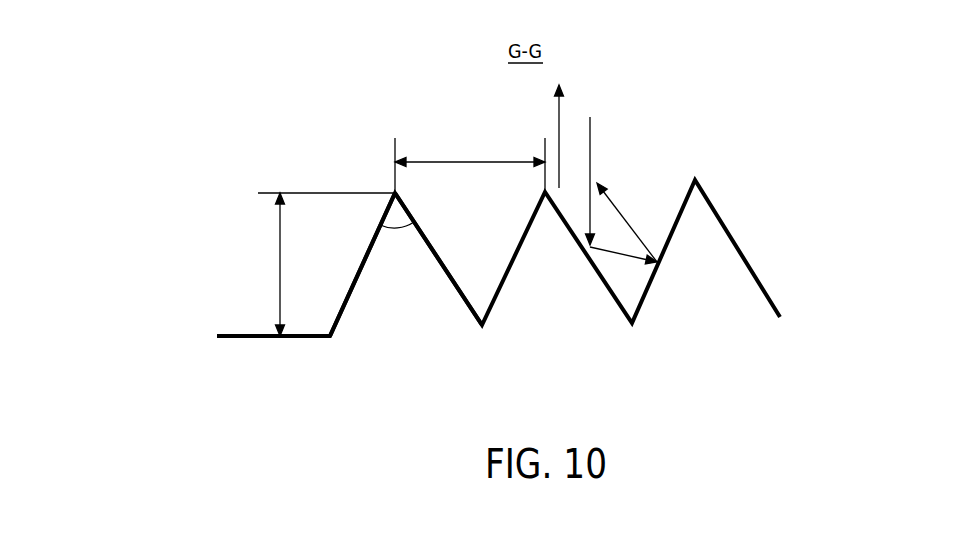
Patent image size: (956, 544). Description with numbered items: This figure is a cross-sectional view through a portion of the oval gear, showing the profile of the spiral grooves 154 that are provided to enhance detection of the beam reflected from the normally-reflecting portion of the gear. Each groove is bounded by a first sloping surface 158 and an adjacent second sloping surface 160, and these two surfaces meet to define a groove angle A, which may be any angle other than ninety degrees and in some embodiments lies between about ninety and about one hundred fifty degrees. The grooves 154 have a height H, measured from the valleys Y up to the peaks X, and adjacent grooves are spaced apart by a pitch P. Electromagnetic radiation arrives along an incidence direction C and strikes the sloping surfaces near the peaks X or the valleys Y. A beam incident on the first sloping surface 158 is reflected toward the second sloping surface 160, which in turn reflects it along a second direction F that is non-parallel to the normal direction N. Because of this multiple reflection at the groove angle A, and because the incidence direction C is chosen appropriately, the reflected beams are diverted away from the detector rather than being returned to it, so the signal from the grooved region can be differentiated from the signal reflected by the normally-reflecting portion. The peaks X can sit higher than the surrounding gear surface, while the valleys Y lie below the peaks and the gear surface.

The spiral grooves 154 is at (752, 114).
The first sloping surface 158 is at (343, 312).
The second sloping surface 160 is at (452, 284).
The height H is at (279, 276).
The pitch P is at (466, 160).
The groove angle A is at (395, 230).
The normal direction N is at (561, 111).
The incidence direction C is at (591, 134).
The second direction F is at (608, 196).
The peaks X is at (392, 191).
The valleys Y is at (480, 333).